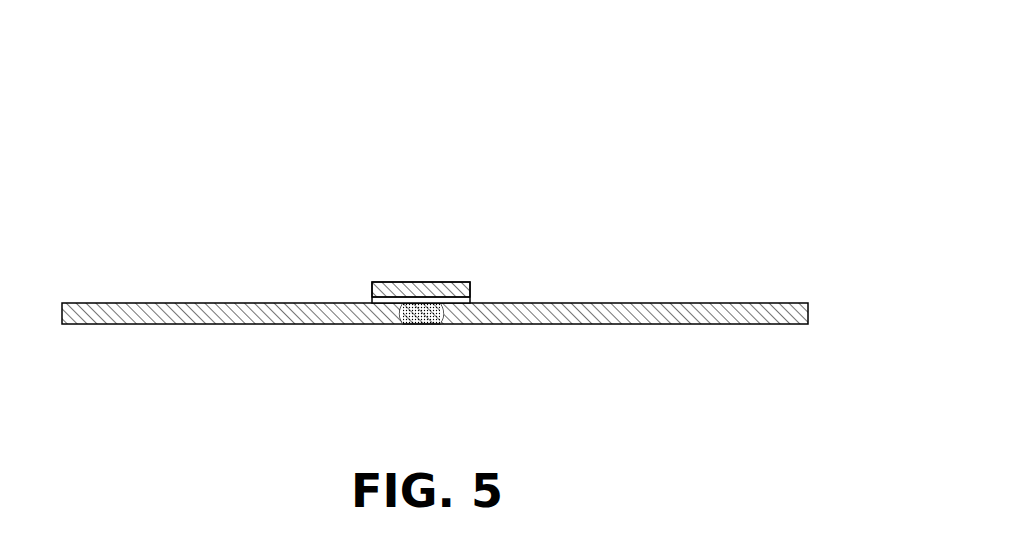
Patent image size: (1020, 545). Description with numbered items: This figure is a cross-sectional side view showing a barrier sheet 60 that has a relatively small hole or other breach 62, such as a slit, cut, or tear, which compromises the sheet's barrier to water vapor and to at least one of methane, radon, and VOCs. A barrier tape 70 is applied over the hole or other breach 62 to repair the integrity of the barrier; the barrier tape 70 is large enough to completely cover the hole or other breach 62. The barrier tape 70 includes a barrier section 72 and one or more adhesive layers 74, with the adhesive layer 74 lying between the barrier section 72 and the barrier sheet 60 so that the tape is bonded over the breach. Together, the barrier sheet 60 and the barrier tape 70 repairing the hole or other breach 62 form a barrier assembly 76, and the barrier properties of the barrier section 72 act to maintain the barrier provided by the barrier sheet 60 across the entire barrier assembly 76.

The barrier sheet 60 is at (200, 317).
The hole or other breach 62 is at (417, 315).
The barrier tape 70 is at (432, 272).
The barrier section 72 is at (467, 288).
The adhesive layer 74 is at (397, 305).
The barrier assembly 76 is at (645, 148).